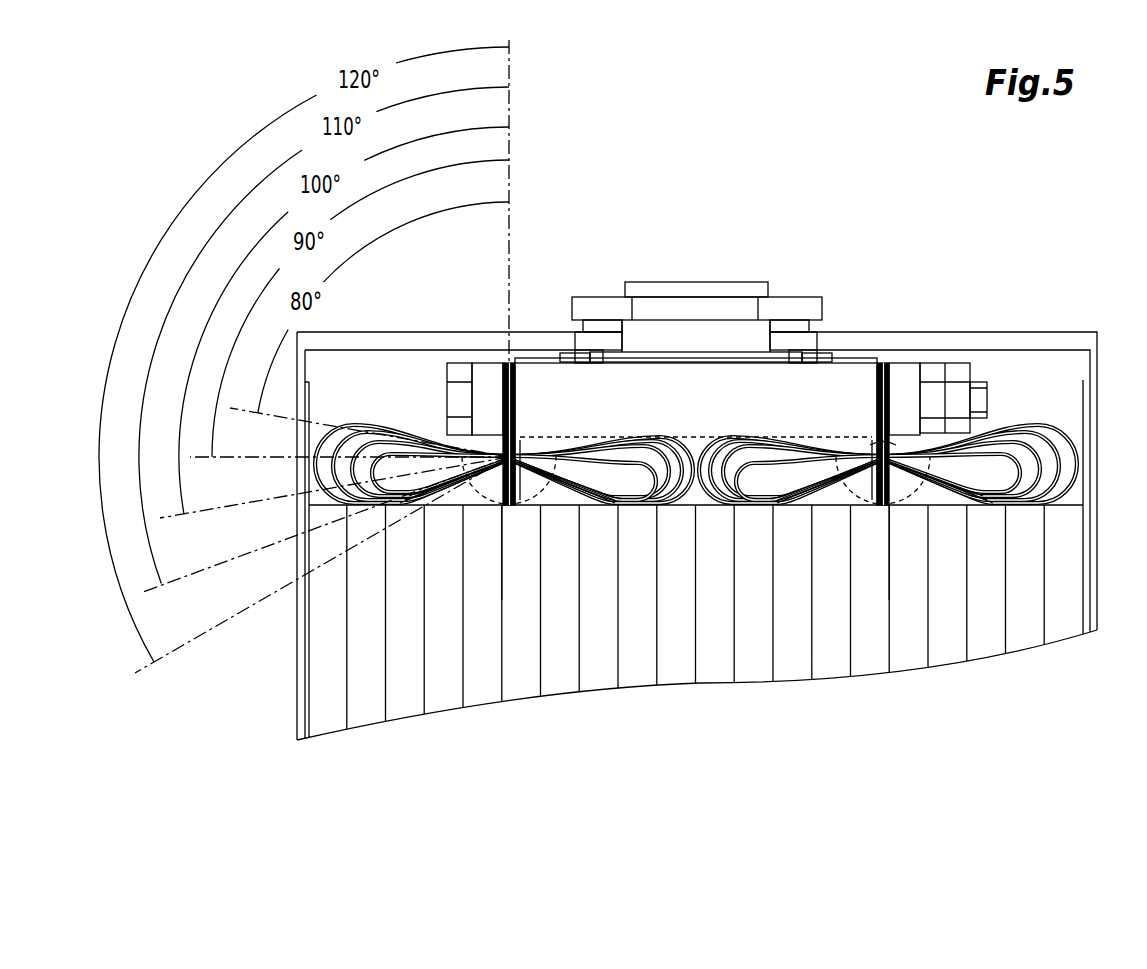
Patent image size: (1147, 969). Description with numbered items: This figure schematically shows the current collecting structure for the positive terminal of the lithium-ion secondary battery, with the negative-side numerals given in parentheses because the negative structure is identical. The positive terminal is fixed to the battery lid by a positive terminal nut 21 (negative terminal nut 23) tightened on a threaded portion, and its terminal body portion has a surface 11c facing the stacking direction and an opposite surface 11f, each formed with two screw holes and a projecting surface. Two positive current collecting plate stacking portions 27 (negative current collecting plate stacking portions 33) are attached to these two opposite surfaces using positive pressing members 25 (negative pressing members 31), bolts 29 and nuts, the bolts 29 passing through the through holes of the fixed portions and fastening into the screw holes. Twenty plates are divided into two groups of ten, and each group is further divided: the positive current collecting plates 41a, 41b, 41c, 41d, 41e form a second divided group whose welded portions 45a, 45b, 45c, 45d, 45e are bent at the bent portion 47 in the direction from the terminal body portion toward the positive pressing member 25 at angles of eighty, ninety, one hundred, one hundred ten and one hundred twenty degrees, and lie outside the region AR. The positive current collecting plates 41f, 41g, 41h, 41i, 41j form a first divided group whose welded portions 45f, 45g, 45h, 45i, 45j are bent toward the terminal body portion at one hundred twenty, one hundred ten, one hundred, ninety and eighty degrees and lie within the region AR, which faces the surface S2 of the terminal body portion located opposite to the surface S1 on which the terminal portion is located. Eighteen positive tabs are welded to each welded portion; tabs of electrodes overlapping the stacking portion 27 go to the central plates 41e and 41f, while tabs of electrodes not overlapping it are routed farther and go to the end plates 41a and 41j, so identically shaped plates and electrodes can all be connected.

The positive terminal nut 21 is at (696, 297).
The negative terminal nut 23 is at (684, 282).
The positive pressing member 25 is at (696, 336).
The negative pressing member 31 is at (495, 387).
The positive current collecting plate stacking portion 27 is at (809, 342).
The negative current collecting plate stacking portion 33 is at (513, 352).
The bolt 29 is at (462, 400).
The surface of the terminal body portion 11f is at (582, 360).
The surface facing the stacking direction 11c is at (867, 336).
The positive current collecting plate 41a is at (672, 648).
The positive current collecting plate 41b is at (684, 636).
The positive current collecting plate 41c is at (691, 626).
The positive current collecting plate 41d is at (696, 632).
The positive current collecting plate 41e is at (696, 650).
The positive current collecting plate 41f is at (690, 639).
The positive current collecting plate 41g is at (696, 626).
The positive current collecting plate 41h is at (696, 628).
The positive current collecting plate 41i is at (696, 648).
The positive current collecting plate 41j is at (696, 665).
The welded portion 45a is at (440, 497).
The welded portion 45b is at (448, 494).
The welded portion 45c is at (456, 491).
The welded portion 45d is at (464, 489).
The welded portion 45e is at (472, 487).
The welded portion 45f is at (530, 492).
The welded portion 45g is at (548, 492).
The welded portion 45h is at (570, 492).
The welded portion 45i is at (578, 492).
The welded portion 45j is at (585, 492).
The bent portion 47 is at (509, 507).
The surface on which the terminal portion is located S1 is at (837, 437).
The surface of the terminal body portion opposite to surface S1 S2 is at (553, 437).
The region facing surface S2 AR is at (873, 447).